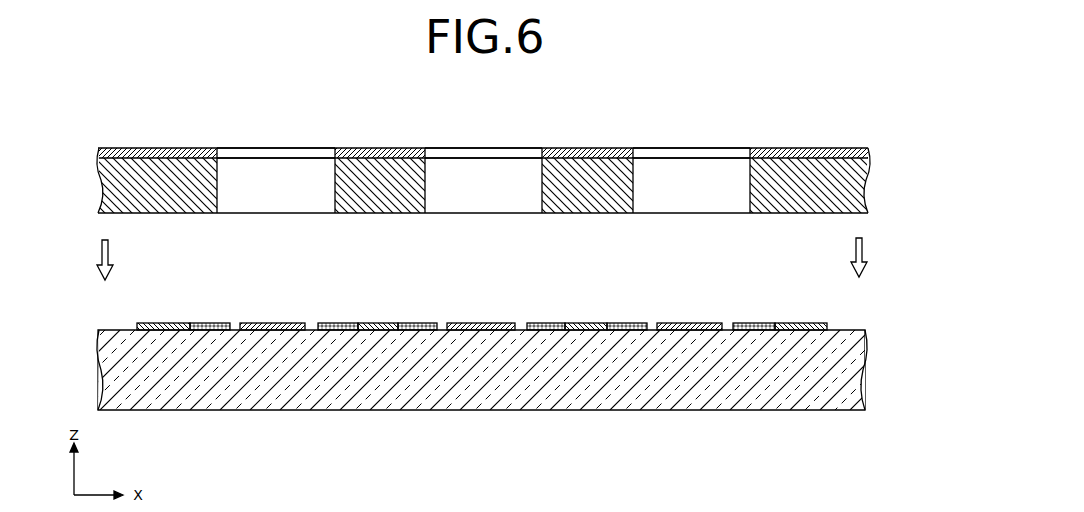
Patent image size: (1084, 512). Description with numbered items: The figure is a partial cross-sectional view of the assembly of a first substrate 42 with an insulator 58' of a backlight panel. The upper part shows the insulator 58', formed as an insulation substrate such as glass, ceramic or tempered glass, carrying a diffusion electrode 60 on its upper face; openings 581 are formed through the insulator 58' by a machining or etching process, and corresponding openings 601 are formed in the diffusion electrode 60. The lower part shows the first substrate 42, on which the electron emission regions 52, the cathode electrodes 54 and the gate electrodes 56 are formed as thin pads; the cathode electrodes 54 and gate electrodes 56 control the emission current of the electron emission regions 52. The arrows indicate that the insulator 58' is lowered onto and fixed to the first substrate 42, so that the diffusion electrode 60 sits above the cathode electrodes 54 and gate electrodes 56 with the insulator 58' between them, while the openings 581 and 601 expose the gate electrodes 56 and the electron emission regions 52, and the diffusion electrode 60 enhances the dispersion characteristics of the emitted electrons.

The first substrate 42 is at (468, 393).
The electron emission regions 52 is at (545, 326).
The cathode electrodes 54 is at (585, 326).
The gate electrodes 56 is at (690, 326).
The insulator 58' is at (483, 208).
The opening 581 is at (480, 198).
The diffusion electrode 60 is at (585, 146).
The opening 601 is at (478, 146).